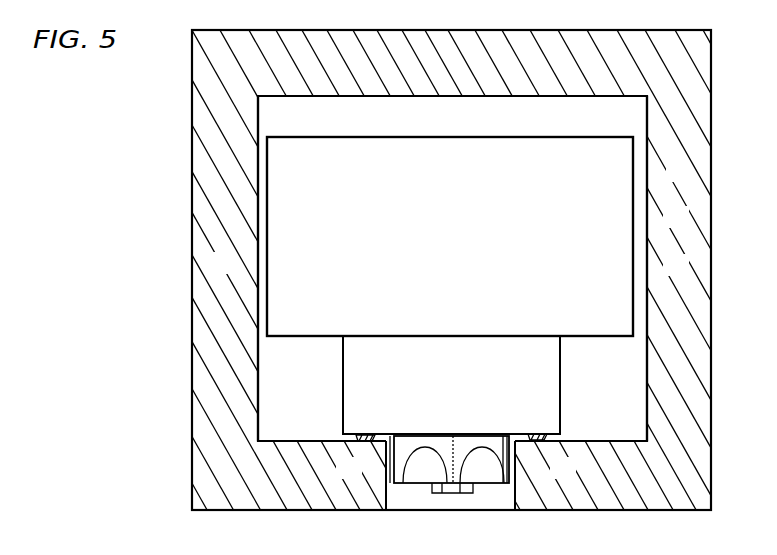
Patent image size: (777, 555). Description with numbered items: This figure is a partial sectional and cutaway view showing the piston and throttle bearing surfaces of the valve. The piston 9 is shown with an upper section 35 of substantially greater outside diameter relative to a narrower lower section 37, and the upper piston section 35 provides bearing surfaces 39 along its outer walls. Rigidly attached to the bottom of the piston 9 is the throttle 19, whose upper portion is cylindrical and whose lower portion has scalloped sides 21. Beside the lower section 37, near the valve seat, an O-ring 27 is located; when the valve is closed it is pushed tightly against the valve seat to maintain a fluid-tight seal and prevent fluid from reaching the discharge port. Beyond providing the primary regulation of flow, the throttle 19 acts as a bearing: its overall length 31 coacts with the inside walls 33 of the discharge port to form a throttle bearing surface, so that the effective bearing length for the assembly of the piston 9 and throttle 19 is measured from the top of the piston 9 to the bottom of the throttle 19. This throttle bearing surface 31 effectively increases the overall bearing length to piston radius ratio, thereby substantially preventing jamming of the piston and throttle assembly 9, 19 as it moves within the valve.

The piston 9 is at (634, 175).
The throttle 19 is at (407, 486).
The scalloped sides 21 is at (488, 472).
The O-ring 27 is at (366, 438).
The overall length 31 is at (389, 443).
The inside walls 33 is at (386, 464).
The upper section 35 is at (608, 277).
The lower section 37 is at (540, 374).
The bearing surfaces 39 is at (266, 266).